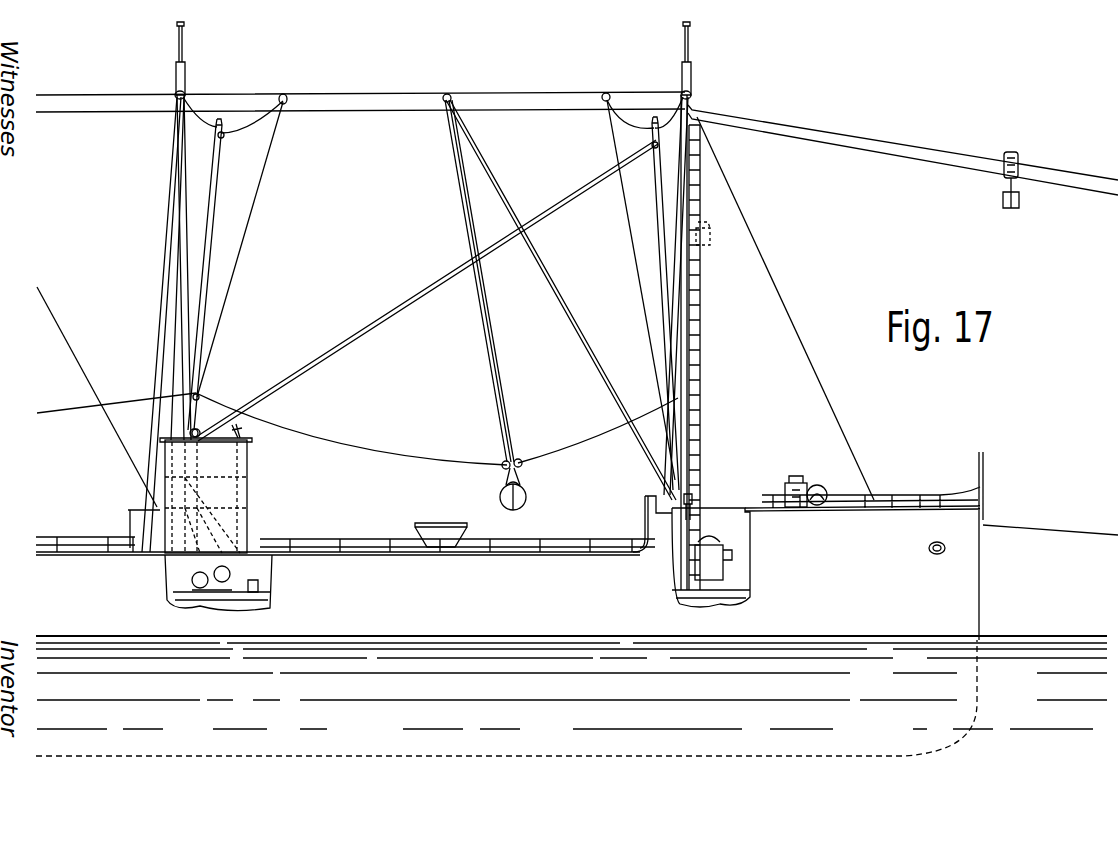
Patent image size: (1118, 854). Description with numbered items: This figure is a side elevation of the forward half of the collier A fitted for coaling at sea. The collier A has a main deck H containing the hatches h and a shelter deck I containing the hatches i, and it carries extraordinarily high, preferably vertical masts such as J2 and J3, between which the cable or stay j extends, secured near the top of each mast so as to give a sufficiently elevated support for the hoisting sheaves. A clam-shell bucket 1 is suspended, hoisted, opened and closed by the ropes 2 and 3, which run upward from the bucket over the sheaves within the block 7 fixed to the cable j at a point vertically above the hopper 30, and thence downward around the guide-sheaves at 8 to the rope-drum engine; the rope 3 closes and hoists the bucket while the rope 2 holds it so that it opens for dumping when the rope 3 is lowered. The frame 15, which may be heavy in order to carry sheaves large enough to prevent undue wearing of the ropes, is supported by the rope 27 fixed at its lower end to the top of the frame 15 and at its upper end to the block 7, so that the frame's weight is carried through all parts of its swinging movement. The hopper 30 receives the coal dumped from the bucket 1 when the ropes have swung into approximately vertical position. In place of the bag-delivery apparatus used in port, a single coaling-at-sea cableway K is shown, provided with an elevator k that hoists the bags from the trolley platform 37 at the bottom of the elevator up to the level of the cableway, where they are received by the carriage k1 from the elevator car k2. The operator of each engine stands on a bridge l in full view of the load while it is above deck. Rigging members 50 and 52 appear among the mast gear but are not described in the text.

The cable or stay j is at (356, 94).
The coaling-at-sea cableway K is at (846, 142).
The carriage k1 is at (1016, 160).
The mast J2 is at (177, 262).
The pulley block 52 is at (283, 96).
The guy line 50 is at (254, 228).
The block 7 is at (450, 96).
The rope 27 is at (499, 396).
The rope 2 is at (498, 412).
The rope 3 is at (511, 428).
The mast J3 is at (700, 332).
The elevator k is at (698, 452).
The elevator car k2 is at (709, 240).
The frame 15 is at (504, 469).
The clam-shell bucket 1 is at (527, 504).
The hopper 30 is at (432, 525).
The shelter deck I is at (301, 549).
The hatches i is at (361, 545).
The bridge l is at (206, 488).
The hatches h is at (270, 586).
The main deck H is at (741, 591).
The trolley platform 37 is at (685, 598).
The guide-sheaves 8 is at (693, 500).
The collier A is at (931, 546).